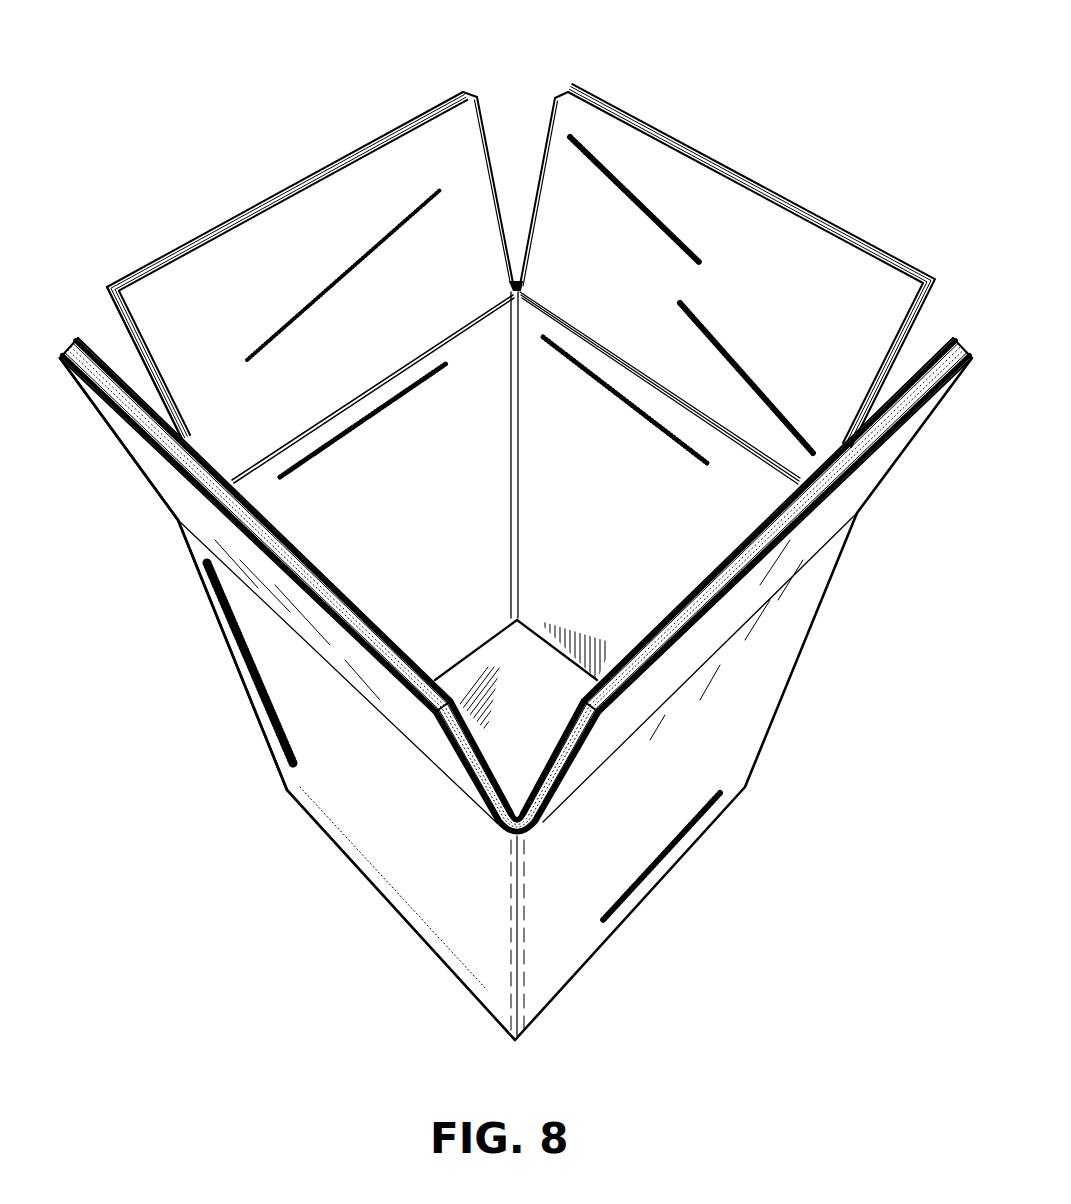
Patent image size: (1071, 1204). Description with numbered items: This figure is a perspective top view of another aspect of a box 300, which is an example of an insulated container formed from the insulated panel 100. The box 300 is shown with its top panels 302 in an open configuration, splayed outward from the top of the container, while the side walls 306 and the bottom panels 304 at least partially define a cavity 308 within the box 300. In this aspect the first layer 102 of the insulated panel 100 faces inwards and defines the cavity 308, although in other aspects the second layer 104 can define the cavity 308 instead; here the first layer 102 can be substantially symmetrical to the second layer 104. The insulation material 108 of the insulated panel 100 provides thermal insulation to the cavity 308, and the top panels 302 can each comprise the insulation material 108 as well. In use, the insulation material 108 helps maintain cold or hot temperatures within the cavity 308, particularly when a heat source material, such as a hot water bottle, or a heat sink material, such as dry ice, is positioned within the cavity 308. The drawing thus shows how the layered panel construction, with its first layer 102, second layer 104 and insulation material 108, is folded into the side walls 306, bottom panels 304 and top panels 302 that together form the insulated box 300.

The box 300 is at (172, 107).
The insulated panel 100 is at (352, 227).
The first layer 102 is at (205, 320).
The insulation material 108 is at (150, 398).
The second layer 104 is at (237, 622).
The top panels 302 is at (613, 693).
The bottom panels 304 is at (465, 685).
The side walls 306 is at (565, 417).
The cavity 308 is at (370, 473).